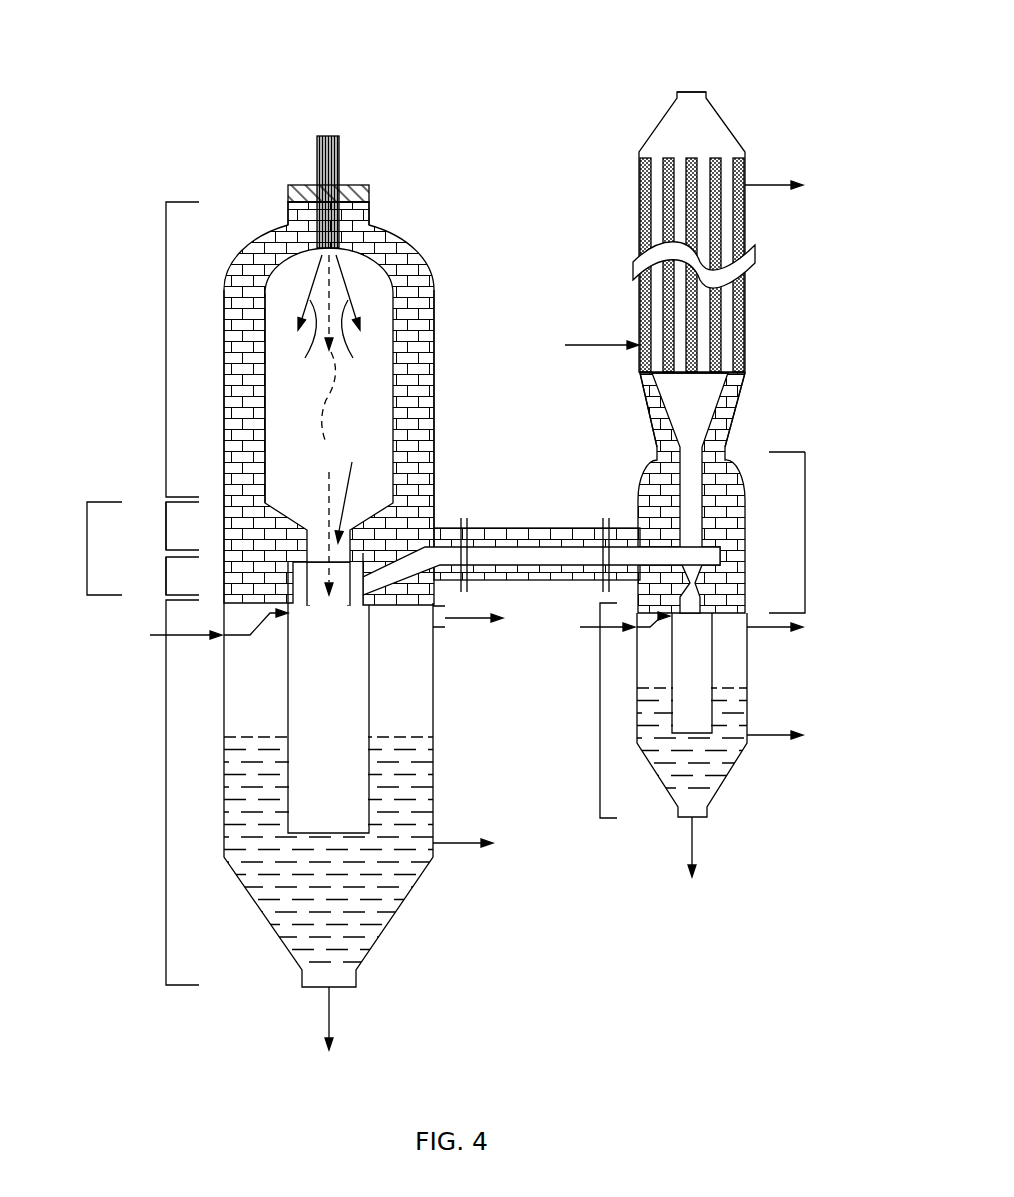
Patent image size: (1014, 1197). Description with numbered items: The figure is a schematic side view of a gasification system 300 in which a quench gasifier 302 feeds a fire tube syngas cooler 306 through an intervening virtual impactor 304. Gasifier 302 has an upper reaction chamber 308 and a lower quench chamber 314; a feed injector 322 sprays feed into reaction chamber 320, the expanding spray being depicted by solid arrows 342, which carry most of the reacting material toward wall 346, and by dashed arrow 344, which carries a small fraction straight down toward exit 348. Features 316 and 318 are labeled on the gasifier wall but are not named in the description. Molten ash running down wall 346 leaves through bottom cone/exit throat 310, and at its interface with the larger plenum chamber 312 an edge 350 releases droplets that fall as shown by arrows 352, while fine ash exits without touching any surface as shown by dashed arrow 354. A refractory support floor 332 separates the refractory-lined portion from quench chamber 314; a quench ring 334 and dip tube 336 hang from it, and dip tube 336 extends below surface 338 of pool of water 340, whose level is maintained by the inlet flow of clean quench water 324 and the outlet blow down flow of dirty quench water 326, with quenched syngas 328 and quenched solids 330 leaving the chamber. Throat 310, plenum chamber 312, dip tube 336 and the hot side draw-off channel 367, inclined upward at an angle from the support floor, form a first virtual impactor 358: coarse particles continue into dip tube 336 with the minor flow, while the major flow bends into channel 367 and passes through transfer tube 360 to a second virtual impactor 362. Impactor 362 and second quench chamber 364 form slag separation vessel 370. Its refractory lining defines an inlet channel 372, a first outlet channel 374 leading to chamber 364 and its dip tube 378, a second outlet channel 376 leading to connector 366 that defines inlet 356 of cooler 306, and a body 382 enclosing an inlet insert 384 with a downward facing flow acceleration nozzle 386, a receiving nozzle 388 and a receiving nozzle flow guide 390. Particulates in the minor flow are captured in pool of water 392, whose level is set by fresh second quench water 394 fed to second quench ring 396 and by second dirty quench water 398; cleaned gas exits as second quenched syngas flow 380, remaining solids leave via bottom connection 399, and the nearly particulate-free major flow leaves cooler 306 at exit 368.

The gasification system 300 is at (178, 60).
The quench gasifier 302 is at (116, 392).
The virtual impactor 304 is at (825, 570).
The fire tube syngas cooler 306 is at (772, 283).
The reaction chamber 308 is at (166, 332).
The bottom cone/exit throat 310 is at (166, 536).
The plenum chamber 312 is at (166, 578).
The quench chamber 314 is at (166, 776).
The vessel shell 316 is at (436, 310).
The refractory lining 318 is at (412, 278).
The reaction chamber 320 is at (352, 265).
The feed injector 322 is at (318, 152).
The inlet flow of clean quench water 324 is at (150, 636).
The outlet blow down flow of dirty quench water 326 is at (455, 843).
The outlet flow of quenched syngas 328 is at (457, 625).
The outlet flow of quenched solids 330 is at (330, 1010).
The refractory support floor 332 is at (250, 603).
The quench ring 334 is at (294, 618).
The dip tube 336 is at (289, 710).
The surface of pool of water 338 is at (400, 735).
The pool of water 340 is at (400, 778).
The solid arrows 342 is at (334, 321).
The dashed arrow 344 is at (331, 347).
The wall of reaction chamber 346 is at (267, 436).
The exit of reaction chamber 348 is at (357, 501).
The edge 350 is at (307, 560).
The arrows 352 is at (330, 625).
The dashed arrow 354 is at (308, 527).
The inlet of fire tube syngas cooler 356 is at (690, 386).
The first virtual impactor 358 is at (87, 552).
The transfer tube 360 is at (508, 526).
The second virtual impactor 362 is at (805, 492).
The second quench chamber 364 is at (600, 720).
The connector 366 is at (730, 415).
The hot side draw-off channel 367 is at (400, 548).
The exit of fire tube syngas cooler 368 is at (700, 120).
The slag separation vessel 370 is at (826, 616).
The inlet channel 372 is at (628, 545).
The first outlet channel 374 is at (630, 598).
The second outlet channel 376 is at (690, 459).
The dip tube 378 is at (677, 704).
The second quenched syngas flow 380 is at (762, 628).
The body 382 is at (688, 507).
The inlet insert 384 is at (627, 553).
The flow acceleration nozzle 386 is at (700, 578).
The receiving nozzle 388 is at (692, 590).
The receiving nozzle flow guide 390 is at (696, 583).
The pool of water 392 is at (735, 712).
The fresh second quench water 394 is at (580, 627).
The second quench ring 396 is at (712, 620).
The second dirty quench water 398 is at (765, 740).
The bottom connection 399 is at (696, 838).